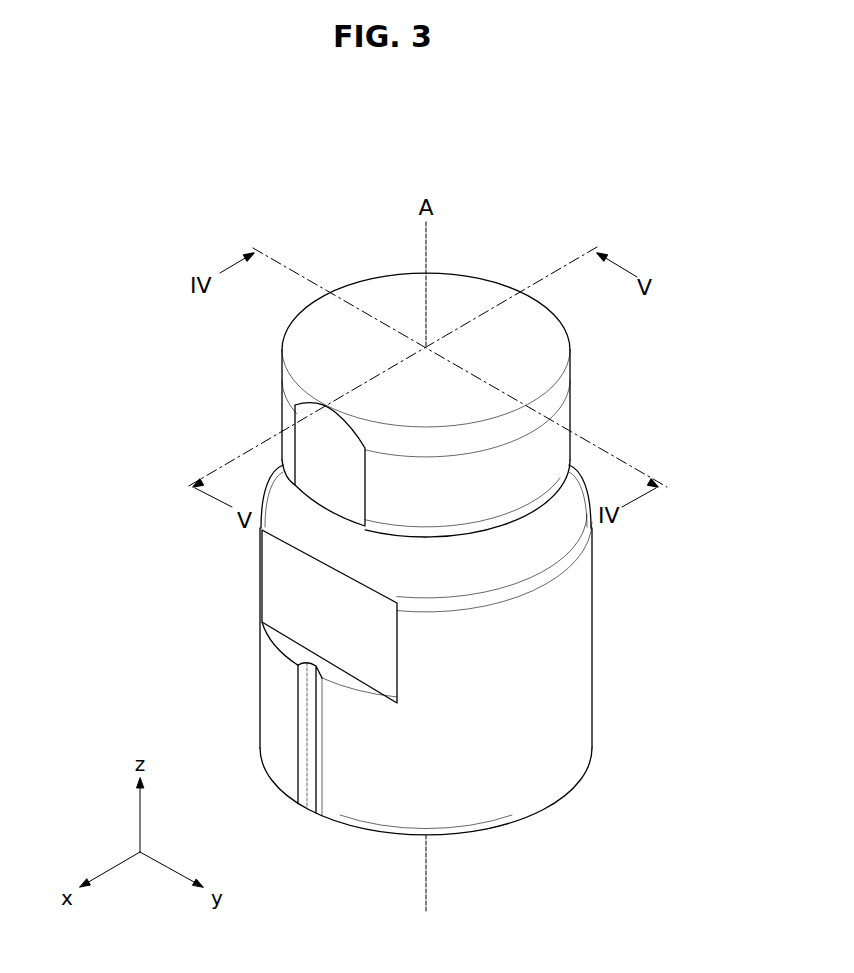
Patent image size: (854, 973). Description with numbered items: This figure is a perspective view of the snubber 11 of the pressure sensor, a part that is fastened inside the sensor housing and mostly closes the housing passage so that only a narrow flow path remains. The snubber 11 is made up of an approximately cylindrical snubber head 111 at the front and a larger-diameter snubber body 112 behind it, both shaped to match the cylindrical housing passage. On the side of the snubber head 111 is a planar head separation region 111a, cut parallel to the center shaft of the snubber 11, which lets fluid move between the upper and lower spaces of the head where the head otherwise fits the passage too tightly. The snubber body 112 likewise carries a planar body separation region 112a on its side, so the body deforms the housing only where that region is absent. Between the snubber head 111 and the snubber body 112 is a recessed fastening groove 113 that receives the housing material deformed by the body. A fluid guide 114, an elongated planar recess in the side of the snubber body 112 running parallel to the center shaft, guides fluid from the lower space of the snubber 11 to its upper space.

The snubber 11 is at (447, 133).
The snubber head 111 is at (543, 352).
The head separation region 111a is at (337, 495).
The snubber body 112 is at (415, 650).
The body separation region 112a is at (315, 608).
The fastening groove 113 is at (533, 548).
The fluid guide 114 is at (313, 747).